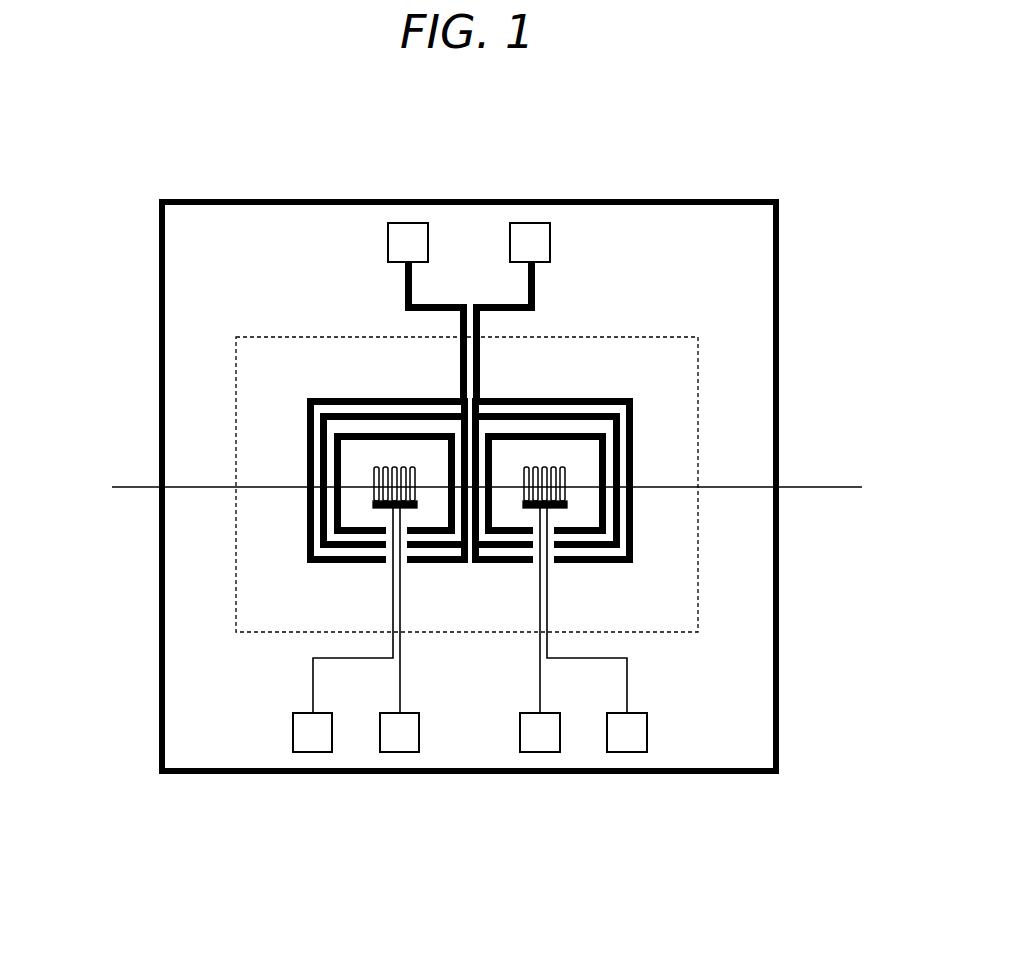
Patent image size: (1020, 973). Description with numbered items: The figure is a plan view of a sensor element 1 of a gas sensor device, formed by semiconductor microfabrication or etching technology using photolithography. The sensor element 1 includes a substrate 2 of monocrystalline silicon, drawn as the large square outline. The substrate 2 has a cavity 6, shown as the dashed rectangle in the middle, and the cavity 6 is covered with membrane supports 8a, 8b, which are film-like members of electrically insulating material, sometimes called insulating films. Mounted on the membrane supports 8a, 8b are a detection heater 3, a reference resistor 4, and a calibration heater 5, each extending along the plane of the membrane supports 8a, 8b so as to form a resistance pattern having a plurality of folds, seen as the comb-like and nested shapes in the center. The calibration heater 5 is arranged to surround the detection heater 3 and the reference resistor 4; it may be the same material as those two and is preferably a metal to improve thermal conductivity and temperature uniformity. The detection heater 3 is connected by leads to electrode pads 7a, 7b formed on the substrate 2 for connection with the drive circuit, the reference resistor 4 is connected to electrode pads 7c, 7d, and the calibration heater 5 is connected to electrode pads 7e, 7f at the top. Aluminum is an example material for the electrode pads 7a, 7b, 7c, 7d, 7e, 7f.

The sensor element 1 is at (122, 216).
The substrate 2 is at (160, 672).
The detection heater 3 is at (390, 468).
The reference resistor 4 is at (555, 468).
The calibration heater 5 is at (632, 438).
The cavity 6 is at (698, 578).
The electrode pad 7a is at (316, 738).
The electrode pad 7b is at (404, 738).
The electrode pad 7c is at (546, 738).
The electrode pad 7d is at (630, 738).
The electrode pad 7e is at (403, 237).
The electrode pad 7f is at (528, 237).
The membrane support 8a is at (655, 620).
The membrane support 8b is at (655, 597).